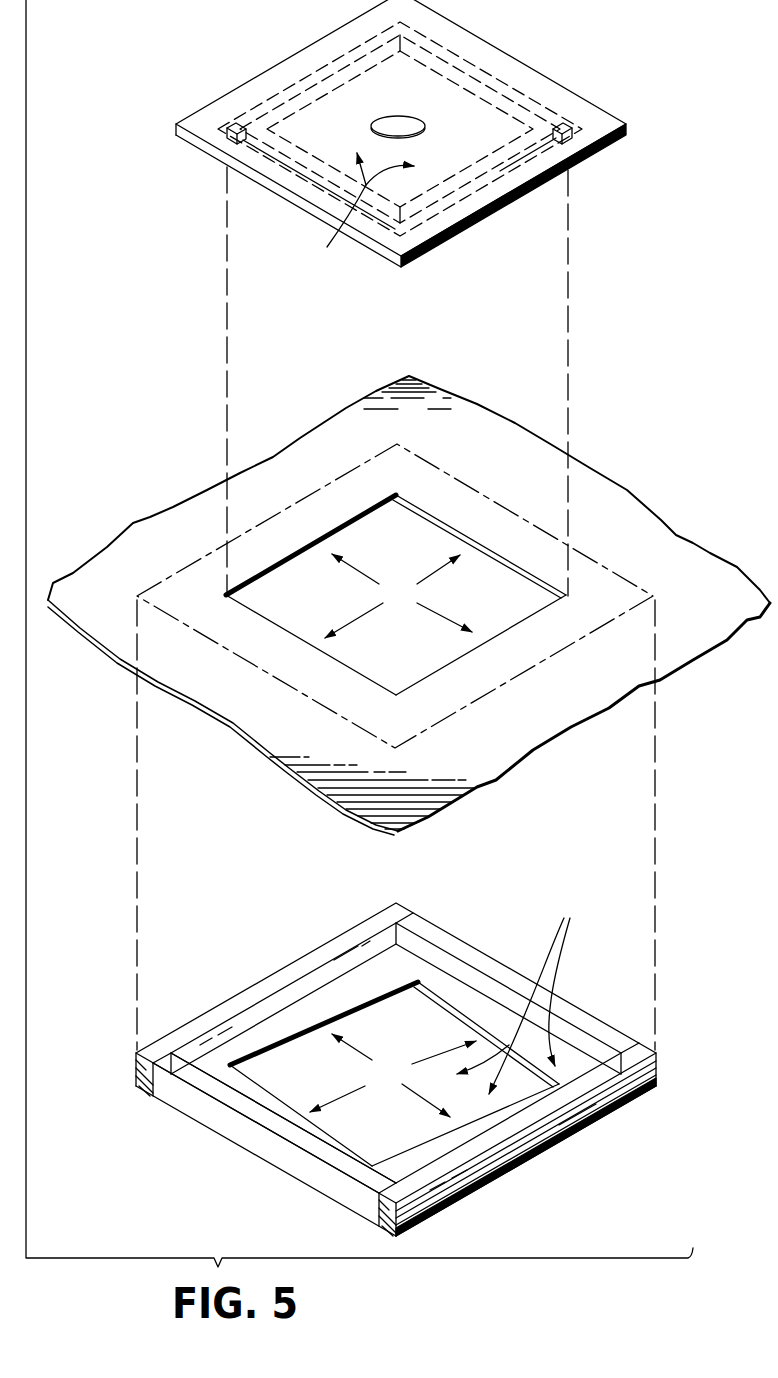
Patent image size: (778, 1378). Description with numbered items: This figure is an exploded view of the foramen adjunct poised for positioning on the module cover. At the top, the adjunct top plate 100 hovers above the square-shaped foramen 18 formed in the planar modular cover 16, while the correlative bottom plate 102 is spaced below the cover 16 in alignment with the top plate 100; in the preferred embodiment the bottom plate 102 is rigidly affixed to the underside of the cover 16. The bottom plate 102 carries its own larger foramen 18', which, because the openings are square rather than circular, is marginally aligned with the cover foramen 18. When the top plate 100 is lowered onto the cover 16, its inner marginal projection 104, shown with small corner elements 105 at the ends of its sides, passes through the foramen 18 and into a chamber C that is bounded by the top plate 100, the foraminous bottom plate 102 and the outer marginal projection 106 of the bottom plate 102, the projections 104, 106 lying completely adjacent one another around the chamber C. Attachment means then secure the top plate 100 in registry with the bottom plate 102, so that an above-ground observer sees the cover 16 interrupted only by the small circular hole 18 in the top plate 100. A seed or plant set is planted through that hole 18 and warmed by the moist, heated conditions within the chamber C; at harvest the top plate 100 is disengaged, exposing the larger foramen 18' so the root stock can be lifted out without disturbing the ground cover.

The top plate 100 is at (600, 117).
The inner marginal projection 104 is at (512, 93).
The corner tabs 105 is at (237, 128).
The foramen 18 is at (396, 383).
The modular cover 16 is at (645, 520).
The bottom plate 102 is at (660, 1080).
The outer marginal projection 106 is at (266, 1145).
The foramen 18' is at (394, 1074).
The chamber C is at (440, 623).